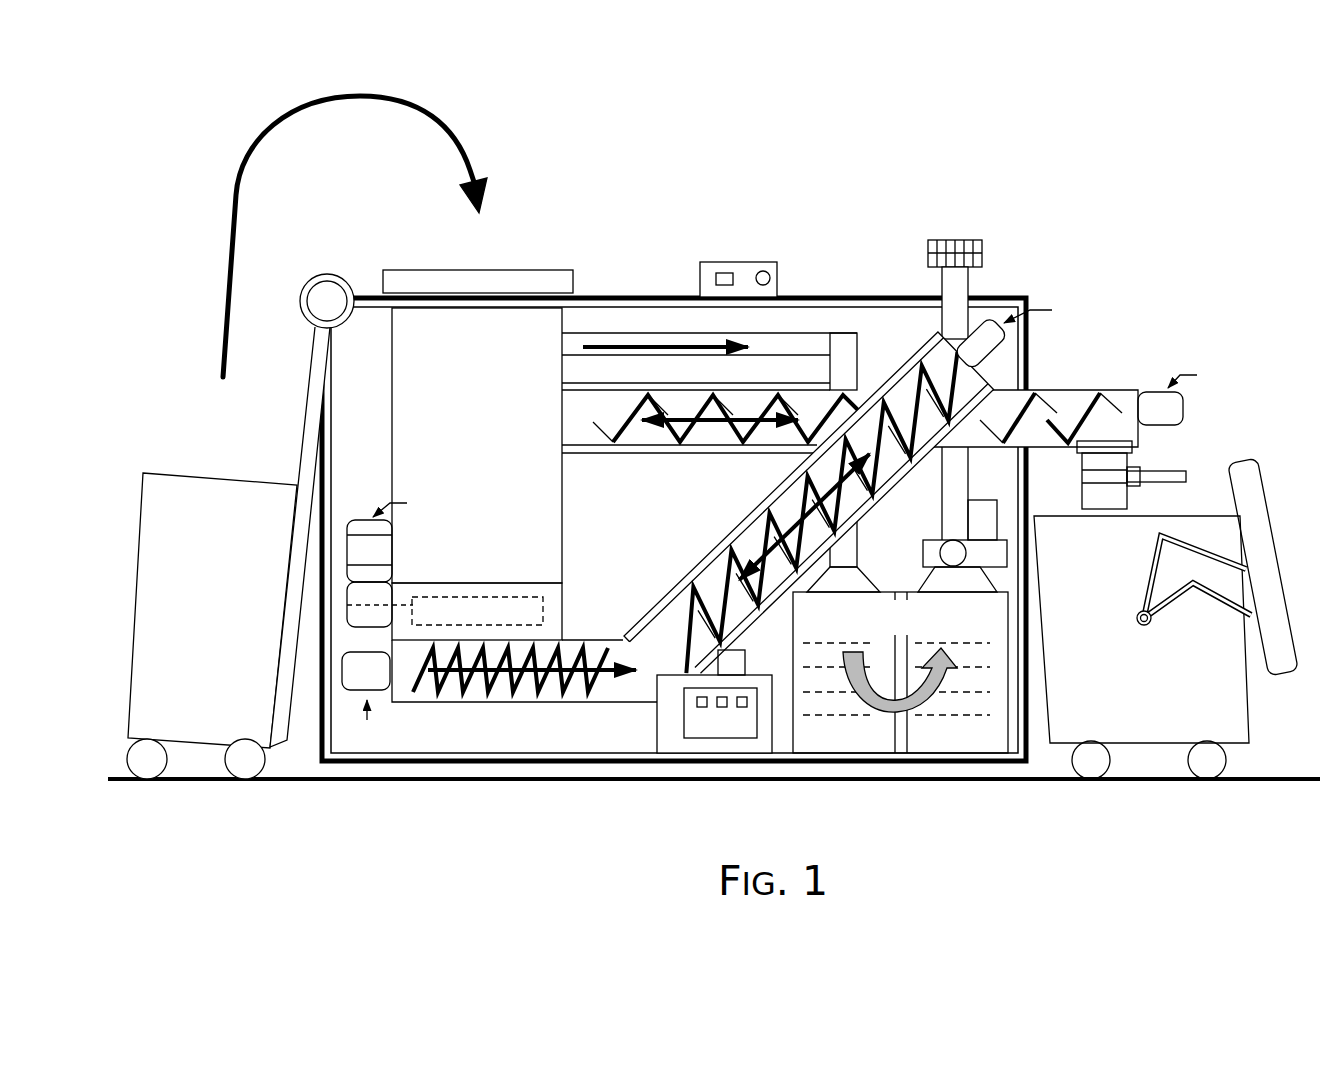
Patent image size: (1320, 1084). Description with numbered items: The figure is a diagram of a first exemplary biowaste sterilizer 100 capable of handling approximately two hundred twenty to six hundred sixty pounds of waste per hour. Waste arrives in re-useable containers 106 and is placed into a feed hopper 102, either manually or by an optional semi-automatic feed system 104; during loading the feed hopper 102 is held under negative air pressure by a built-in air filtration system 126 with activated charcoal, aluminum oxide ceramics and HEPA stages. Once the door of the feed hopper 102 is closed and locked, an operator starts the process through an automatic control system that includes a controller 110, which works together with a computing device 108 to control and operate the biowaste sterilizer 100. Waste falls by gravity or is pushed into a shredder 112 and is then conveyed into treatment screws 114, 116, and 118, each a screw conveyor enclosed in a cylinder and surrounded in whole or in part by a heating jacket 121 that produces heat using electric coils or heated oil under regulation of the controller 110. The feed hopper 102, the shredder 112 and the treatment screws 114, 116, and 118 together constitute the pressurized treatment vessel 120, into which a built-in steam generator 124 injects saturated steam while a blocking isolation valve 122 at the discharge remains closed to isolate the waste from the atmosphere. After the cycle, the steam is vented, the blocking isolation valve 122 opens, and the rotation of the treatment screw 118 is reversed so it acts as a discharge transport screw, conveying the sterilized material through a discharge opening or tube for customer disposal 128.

The biowaste sterilizer 100 is at (735, 128).
The feed hopper 102 is at (458, 455).
The semi-automatic feed system 104 is at (301, 456).
The re-useable containers 106 is at (196, 625).
The computing device 108 is at (742, 257).
The controller 110 is at (713, 275).
The shredder 112 is at (458, 622).
The treatment screw 114 is at (600, 702).
The treatment screw 116 is at (646, 644).
The treatment screw 118 is at (576, 417).
The treatment vessel 120 is at (596, 627).
The heating jacket 121 is at (706, 380).
The blocking isolation valve 122 is at (1136, 466).
The steam generator 124 is at (655, 735).
The air filtration system 126 is at (806, 332).
The customer disposal 128 is at (1130, 669).